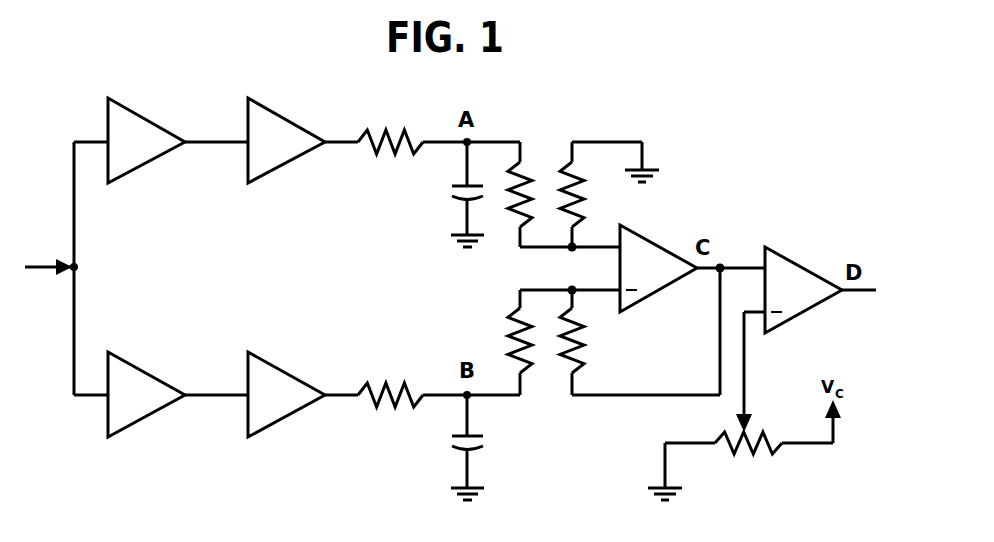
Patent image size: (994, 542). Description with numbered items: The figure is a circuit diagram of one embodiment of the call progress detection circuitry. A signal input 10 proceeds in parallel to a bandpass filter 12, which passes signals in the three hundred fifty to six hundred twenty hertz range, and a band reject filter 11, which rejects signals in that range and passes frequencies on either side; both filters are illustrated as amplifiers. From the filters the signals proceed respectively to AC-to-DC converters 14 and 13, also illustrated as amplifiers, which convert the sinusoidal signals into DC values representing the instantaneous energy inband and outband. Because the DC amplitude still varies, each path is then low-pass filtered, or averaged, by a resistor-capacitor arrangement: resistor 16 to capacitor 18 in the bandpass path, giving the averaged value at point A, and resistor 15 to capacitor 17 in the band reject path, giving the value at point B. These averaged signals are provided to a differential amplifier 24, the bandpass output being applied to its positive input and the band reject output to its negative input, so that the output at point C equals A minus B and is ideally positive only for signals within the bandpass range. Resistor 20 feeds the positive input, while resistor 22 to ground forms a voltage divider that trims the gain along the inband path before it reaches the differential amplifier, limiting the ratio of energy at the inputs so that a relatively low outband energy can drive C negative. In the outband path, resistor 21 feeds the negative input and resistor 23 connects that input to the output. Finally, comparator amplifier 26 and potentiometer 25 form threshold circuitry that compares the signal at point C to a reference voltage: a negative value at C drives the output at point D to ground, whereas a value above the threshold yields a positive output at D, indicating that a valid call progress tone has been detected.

The signal input 10 is at (77, 270).
The band reject filter 11 is at (138, 412).
The bandpass filter 12 is at (138, 160).
The AC-to-DC converter 13 is at (278, 412).
The AC-to-DC converter 14 is at (278, 160).
The resistor 15 is at (398, 410).
The resistor 16 is at (398, 158).
The capacitor 17 is at (462, 448).
The capacitor 18 is at (460, 198).
The resistor 20 is at (530, 167).
The resistor 21 is at (512, 330).
The resistor 22 is at (580, 185).
The resistor 23 is at (582, 348).
The differential amplifier 24 is at (650, 287).
The potentiometer 25 is at (753, 455).
The comparator amplifier 26 is at (798, 305).